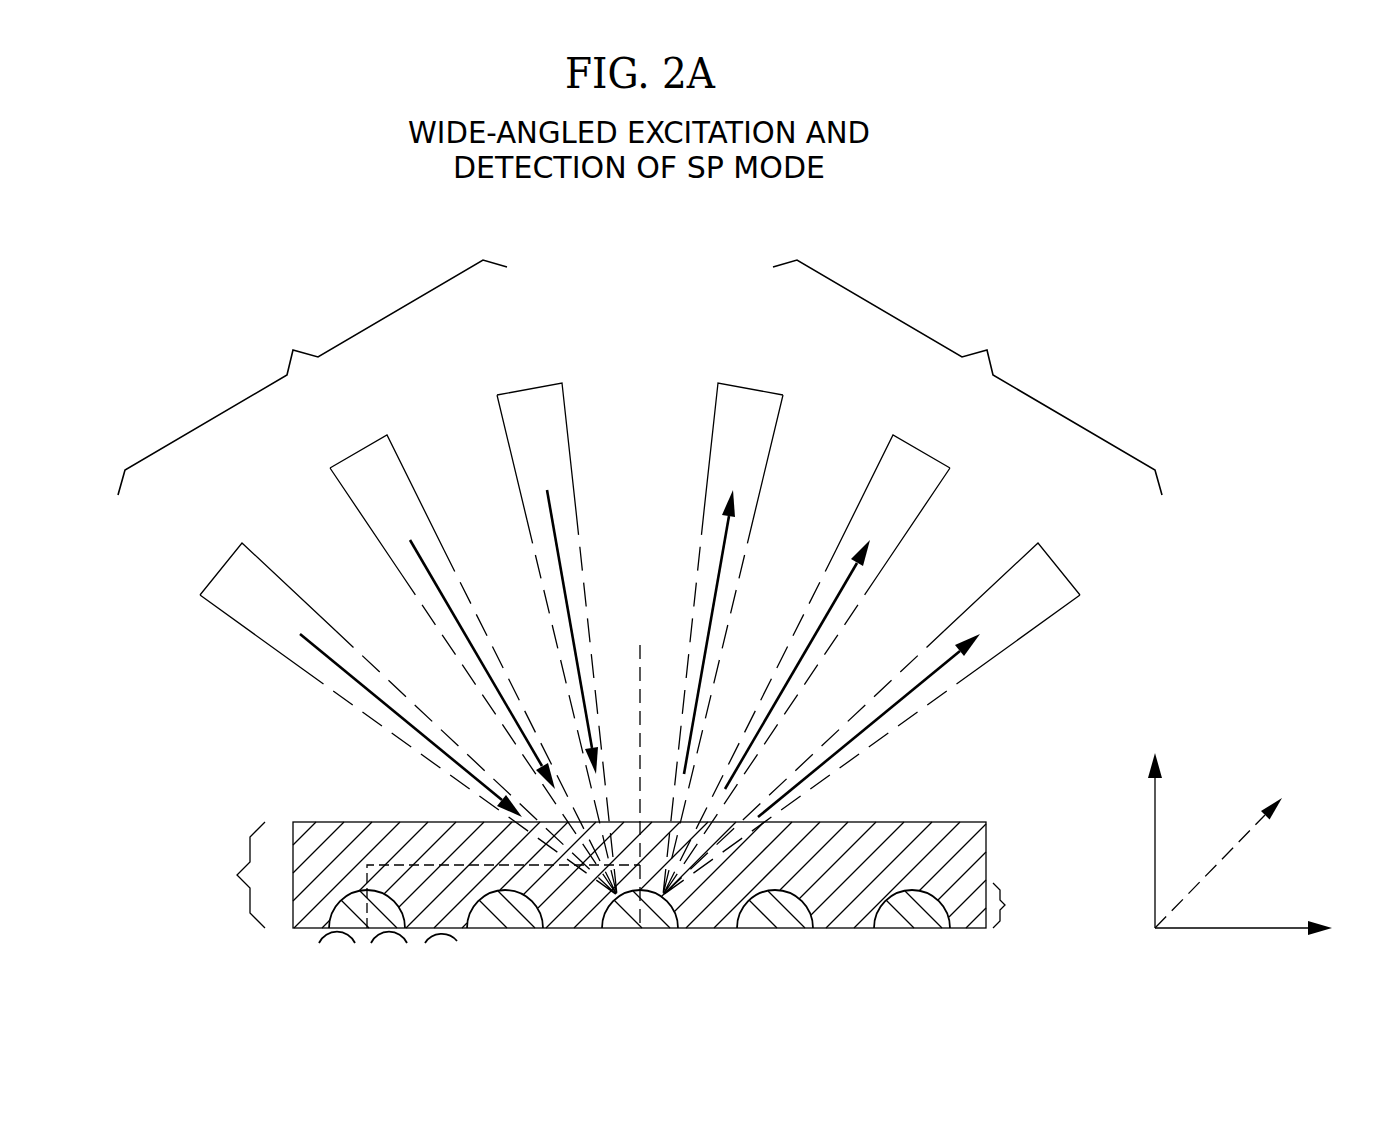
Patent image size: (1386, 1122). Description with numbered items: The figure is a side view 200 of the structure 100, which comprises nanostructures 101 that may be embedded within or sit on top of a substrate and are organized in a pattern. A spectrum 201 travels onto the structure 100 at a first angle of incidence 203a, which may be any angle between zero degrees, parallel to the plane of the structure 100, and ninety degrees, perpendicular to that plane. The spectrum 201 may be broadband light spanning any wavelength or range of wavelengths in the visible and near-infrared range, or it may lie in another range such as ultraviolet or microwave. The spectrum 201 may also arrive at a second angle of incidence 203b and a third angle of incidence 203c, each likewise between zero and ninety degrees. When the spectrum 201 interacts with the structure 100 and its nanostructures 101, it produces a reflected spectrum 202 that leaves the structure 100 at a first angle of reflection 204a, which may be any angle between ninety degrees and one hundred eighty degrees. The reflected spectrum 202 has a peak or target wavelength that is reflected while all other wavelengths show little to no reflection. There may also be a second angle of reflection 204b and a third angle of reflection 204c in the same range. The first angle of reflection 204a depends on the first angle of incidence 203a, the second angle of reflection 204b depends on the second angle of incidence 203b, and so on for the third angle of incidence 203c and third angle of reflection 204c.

The structure 100 is at (237, 875).
The nanostructures 101 is at (1005, 905).
The side view 200 is at (1122, 219).
The spectrum 201 is at (295, 350).
The reflected spectrum 202 is at (985, 350).
The first angle of incidence 203a is at (528, 389).
The second angle of incidence 203b is at (359, 449).
The third angle of incidence 203c is at (221, 566).
The first angle of reflection 204a is at (752, 389).
The second angle of reflection 204b is at (921, 449).
The third angle of reflection 204c is at (1059, 566).